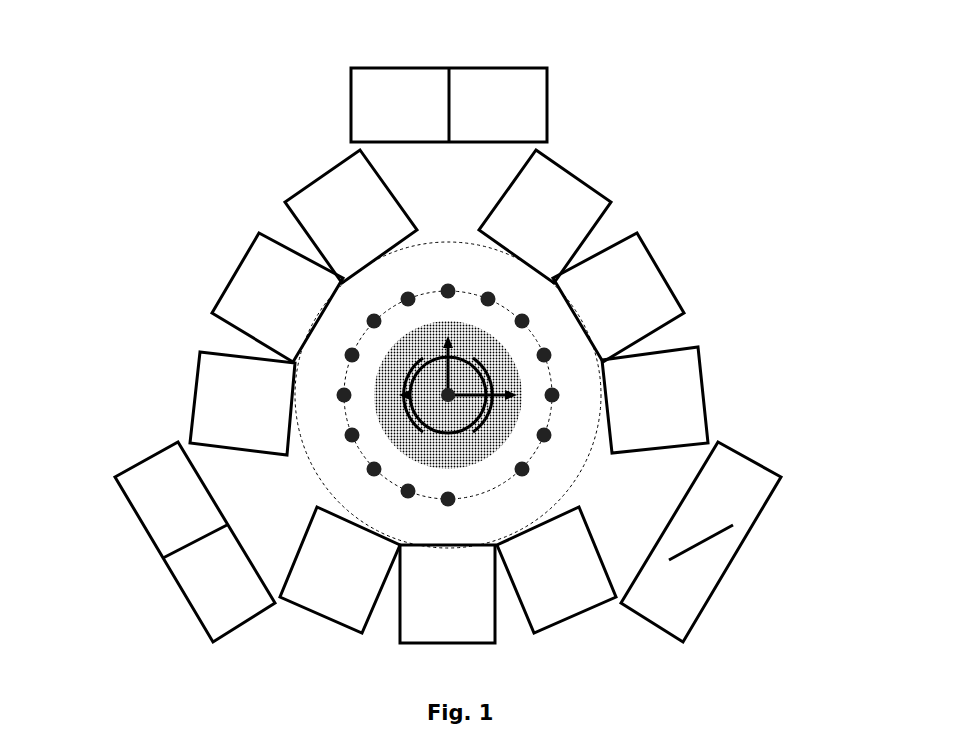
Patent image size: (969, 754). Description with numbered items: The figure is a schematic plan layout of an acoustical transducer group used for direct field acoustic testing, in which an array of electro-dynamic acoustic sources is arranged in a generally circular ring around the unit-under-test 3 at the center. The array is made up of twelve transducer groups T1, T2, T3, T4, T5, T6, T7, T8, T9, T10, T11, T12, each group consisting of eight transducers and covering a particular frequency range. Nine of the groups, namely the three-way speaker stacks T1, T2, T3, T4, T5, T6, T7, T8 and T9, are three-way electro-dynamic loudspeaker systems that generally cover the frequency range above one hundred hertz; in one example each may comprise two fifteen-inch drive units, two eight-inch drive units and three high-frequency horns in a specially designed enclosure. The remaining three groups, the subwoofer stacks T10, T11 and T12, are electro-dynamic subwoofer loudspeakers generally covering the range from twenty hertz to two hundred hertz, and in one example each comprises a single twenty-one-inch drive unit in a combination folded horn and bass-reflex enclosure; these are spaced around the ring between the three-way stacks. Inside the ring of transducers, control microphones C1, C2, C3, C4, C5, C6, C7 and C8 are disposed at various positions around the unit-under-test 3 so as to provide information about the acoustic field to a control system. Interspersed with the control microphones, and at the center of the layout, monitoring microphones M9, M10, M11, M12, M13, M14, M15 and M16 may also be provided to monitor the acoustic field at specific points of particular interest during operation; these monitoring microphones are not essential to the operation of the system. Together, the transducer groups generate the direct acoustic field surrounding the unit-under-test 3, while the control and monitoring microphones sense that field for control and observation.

The three-way electro-dynamic loudspeaker system group T1 is at (584, 162).
The three-way electro-dynamic loudspeaker system group T2 is at (678, 264).
The three-way electro-dynamic loudspeaker system group T3 is at (718, 395).
The three-way electro-dynamic loudspeaker system group T4 is at (587, 629).
The three-way electro-dynamic loudspeaker system group T5 is at (434, 653).
The three-way electro-dynamic loudspeaker system group T6 is at (320, 630).
The three-way electro-dynamic loudspeaker system group T7 is at (176, 391).
The three-way electro-dynamic loudspeaker system group T8 is at (222, 266).
The three-way electro-dynamic loudspeaker system group T9 is at (319, 166).
The electro-dynamic subwoofer loudspeaker group T10 is at (446, 56).
The electro-dynamic subwoofer loudspeaker group T11 is at (743, 566).
The electro-dynamic subwoofer loudspeaker group T12 is at (156, 558).
The unit-under-test 3 is at (520, 430).
The control microphone C1 is at (451, 513).
The control microphone C2 is at (368, 481).
The control microphone C3 is at (347, 408).
The control microphone C4 is at (364, 314).
The control microphone C5 is at (460, 286).
The control microphone C6 is at (536, 318).
The control microphone C7 is at (564, 405).
The control microphone C8 is at (540, 477).
The monitoring microphone M9 is at (410, 505).
The monitoring microphone M10 is at (345, 447).
The monitoring microphone M11 is at (336, 364).
The monitoring microphone M12 is at (400, 290).
The monitoring microphone M13 is at (502, 290).
The monitoring microphone M14 is at (567, 365).
The monitoring microphone M15 is at (563, 441).
The monitoring microphone M16 is at (449, 406).